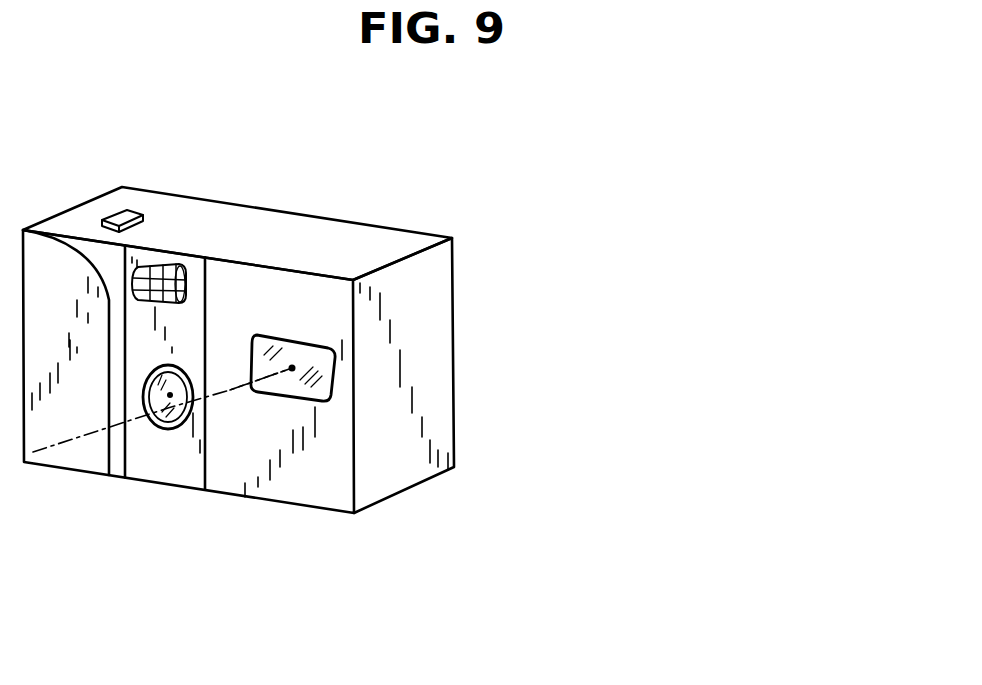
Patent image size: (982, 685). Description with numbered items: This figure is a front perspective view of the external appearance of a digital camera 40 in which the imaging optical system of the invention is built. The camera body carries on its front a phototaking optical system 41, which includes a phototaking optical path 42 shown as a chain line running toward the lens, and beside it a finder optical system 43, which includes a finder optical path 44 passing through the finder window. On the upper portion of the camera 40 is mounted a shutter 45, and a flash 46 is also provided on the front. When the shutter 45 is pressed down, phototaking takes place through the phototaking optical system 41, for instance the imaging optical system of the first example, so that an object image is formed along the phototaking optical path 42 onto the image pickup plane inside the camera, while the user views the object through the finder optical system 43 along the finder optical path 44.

The digital camera 40 is at (540, 288).
The phototaking optical system 41 is at (175, 417).
The phototaking optical path 42 is at (70, 437).
The finder optical system 43 is at (322, 347).
The finder optical path 44 is at (252, 392).
The shutter 45 is at (125, 212).
The flash 46 is at (166, 262).